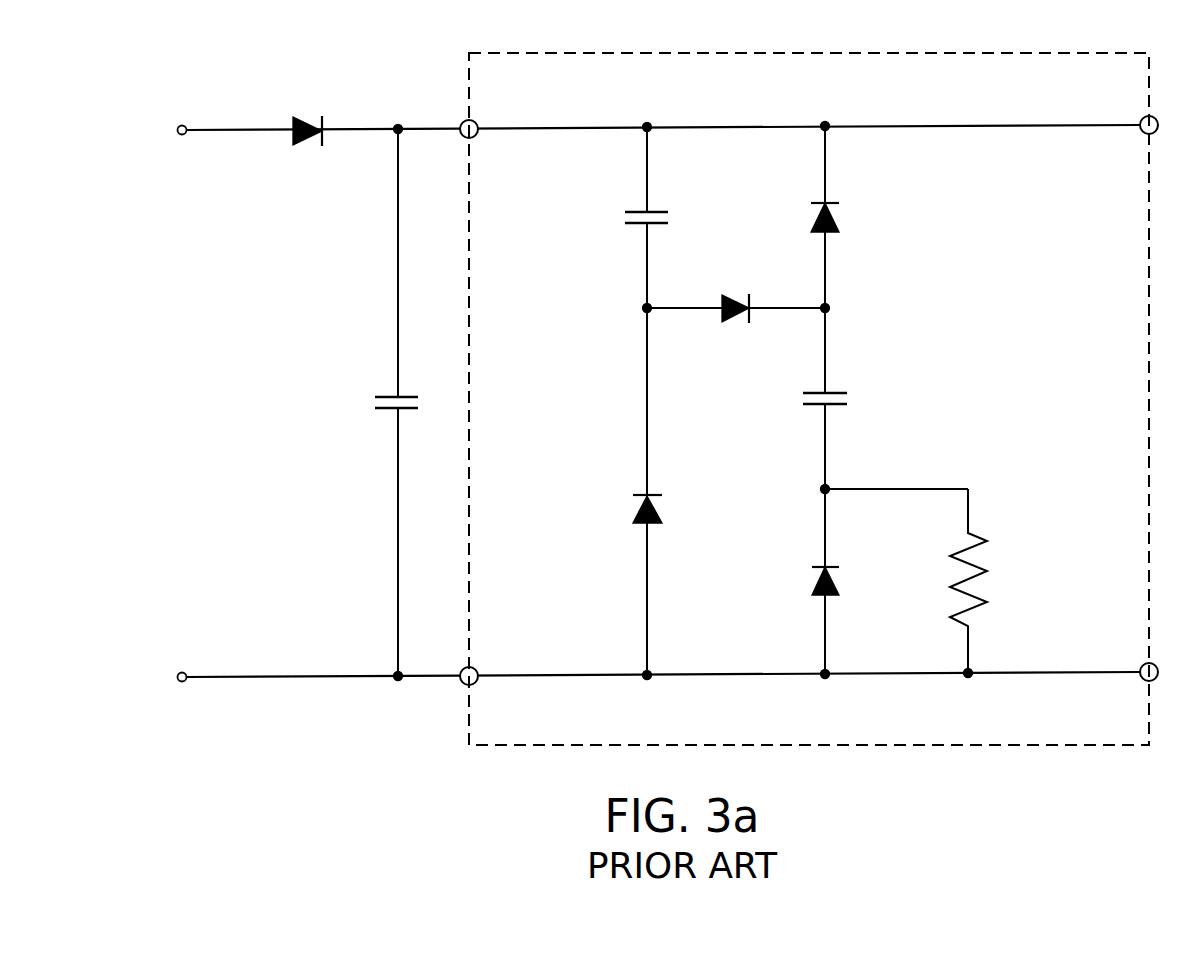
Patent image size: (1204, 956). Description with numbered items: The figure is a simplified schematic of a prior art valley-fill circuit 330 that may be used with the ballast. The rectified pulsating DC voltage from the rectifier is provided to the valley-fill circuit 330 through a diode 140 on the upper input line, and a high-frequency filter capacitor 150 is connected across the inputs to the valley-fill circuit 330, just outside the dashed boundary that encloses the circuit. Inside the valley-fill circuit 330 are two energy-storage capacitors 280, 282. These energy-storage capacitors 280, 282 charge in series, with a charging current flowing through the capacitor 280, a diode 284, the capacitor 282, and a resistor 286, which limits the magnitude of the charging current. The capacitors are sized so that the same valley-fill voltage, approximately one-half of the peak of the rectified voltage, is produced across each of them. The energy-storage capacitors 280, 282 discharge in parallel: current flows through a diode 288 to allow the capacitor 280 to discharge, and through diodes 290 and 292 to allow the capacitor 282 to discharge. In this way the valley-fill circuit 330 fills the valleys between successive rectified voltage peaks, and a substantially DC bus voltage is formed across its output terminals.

The diode 140 is at (305, 120).
The high-frequency filter capacitor 150 is at (392, 396).
The energy-storage capacitor 280 is at (637, 222).
The energy-storage capacitor 282 is at (837, 392).
The diode 284 is at (745, 322).
The resistor 286 is at (982, 567).
The diode 288 is at (637, 515).
The diode 290 is at (830, 215).
The diode 292 is at (810, 587).
The valley-fill circuit 330 is at (740, 53).